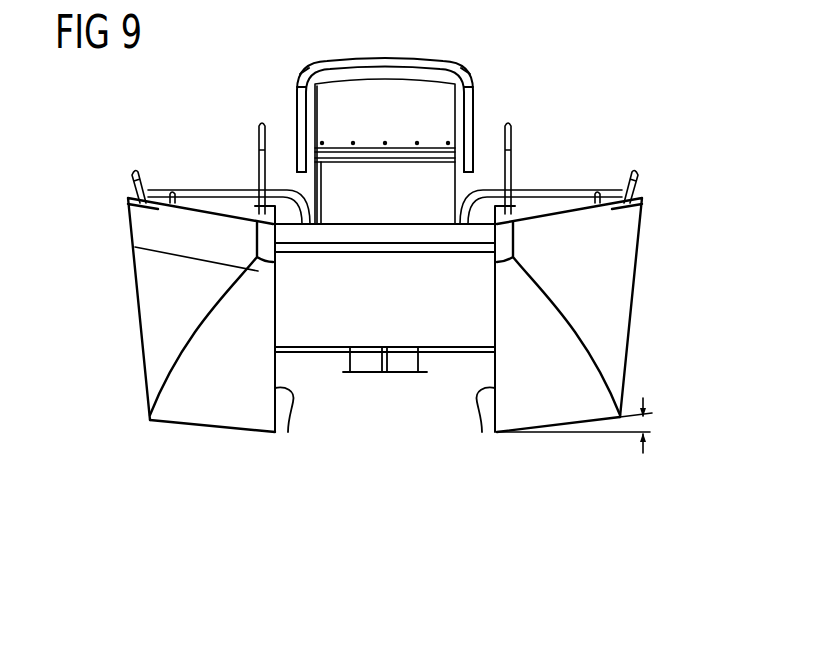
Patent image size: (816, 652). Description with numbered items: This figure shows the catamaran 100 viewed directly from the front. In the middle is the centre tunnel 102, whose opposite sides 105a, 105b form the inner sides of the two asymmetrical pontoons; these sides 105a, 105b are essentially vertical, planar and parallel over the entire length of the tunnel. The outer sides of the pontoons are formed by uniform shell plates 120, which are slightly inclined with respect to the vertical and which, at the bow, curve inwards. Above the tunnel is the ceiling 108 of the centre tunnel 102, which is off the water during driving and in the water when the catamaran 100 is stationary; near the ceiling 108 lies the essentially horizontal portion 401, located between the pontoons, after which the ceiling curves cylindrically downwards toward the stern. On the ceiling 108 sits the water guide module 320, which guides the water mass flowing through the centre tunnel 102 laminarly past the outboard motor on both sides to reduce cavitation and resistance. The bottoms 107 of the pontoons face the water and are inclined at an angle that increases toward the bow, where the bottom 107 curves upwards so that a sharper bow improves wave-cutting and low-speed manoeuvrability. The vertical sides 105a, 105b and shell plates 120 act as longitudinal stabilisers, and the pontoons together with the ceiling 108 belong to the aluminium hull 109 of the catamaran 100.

The catamaran 100 is at (412, 545).
The centre tunnel 102 is at (334, 522).
The side of the centre tunnel 105a is at (288, 432).
The side of the centre tunnel 105b is at (482, 432).
The bottom of the pontoons 107 is at (210, 413).
The ceiling of the centre tunnel 108 is at (460, 338).
The hull 109 is at (122, 372).
The shell plate 120 is at (153, 292).
The water guide module 320 is at (368, 373).
The essentially horizontal portion 401 is at (308, 258).